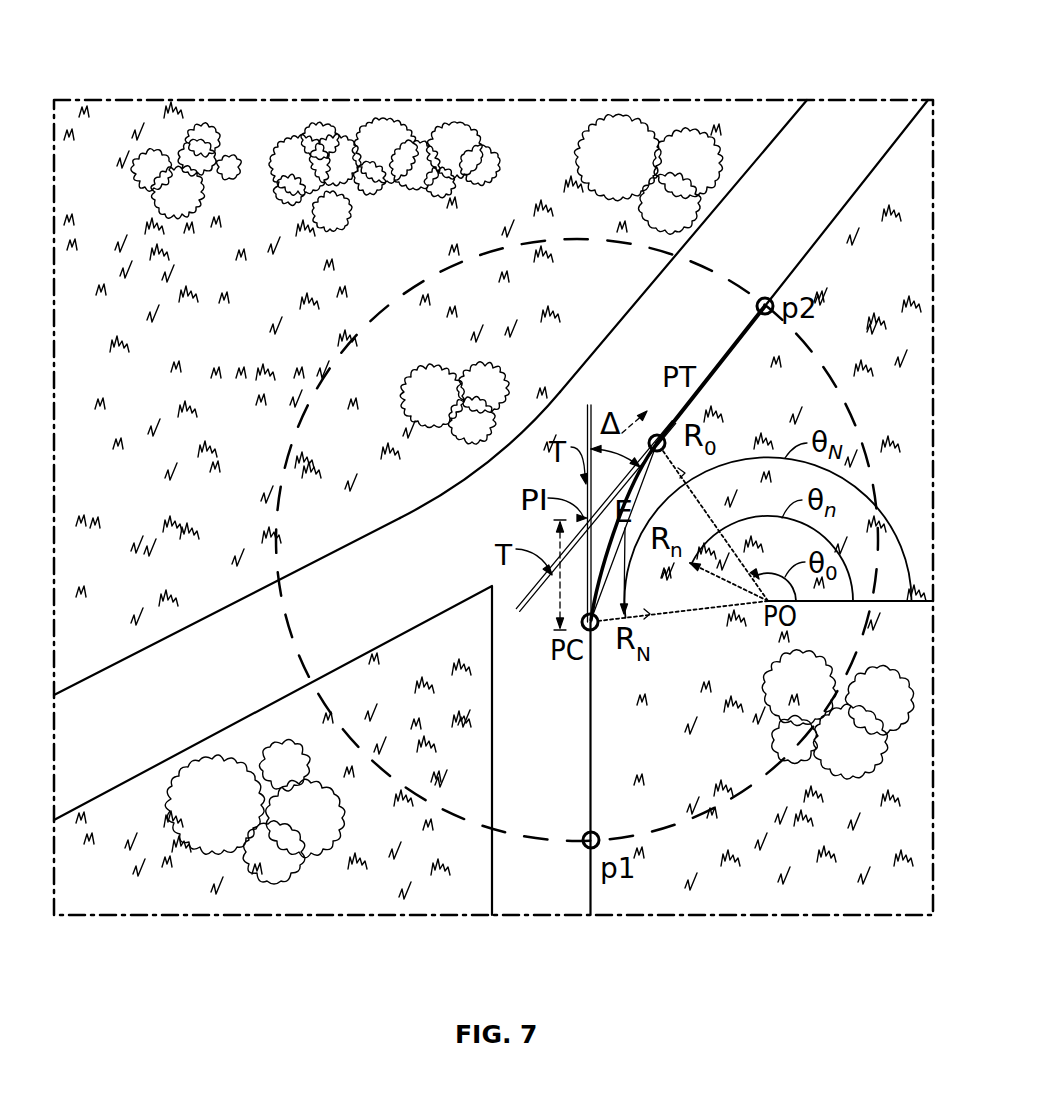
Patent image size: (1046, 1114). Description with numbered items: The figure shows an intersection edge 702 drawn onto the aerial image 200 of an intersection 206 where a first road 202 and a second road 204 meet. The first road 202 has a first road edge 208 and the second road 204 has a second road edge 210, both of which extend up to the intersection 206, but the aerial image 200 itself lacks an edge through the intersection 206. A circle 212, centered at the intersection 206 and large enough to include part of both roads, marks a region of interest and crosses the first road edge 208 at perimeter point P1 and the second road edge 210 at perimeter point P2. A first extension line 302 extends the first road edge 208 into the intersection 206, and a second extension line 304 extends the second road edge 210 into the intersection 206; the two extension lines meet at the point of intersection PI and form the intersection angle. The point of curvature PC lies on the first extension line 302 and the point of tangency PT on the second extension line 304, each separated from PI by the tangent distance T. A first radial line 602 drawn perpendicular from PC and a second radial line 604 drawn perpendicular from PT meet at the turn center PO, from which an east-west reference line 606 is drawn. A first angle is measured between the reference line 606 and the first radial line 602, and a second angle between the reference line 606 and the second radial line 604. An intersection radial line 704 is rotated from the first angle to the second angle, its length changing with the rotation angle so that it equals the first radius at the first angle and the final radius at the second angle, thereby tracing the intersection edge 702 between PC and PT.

The aerial image 200 is at (127, 33).
The first road 202 is at (523, 898).
The second road 204 is at (843, 143).
The intersection 206 is at (506, 518).
The first road edge 208 is at (592, 790).
The second road edge 210 is at (756, 306).
The circle 212 is at (583, 240).
The first extension line 302 is at (584, 595).
The second extension line 304 is at (607, 335).
The first radial line 602 is at (757, 607).
The second radial line 604 is at (702, 483).
The reference line 606 is at (930, 602).
The intersection edge 702 is at (607, 573).
The intersection radial line 704 is at (706, 578).